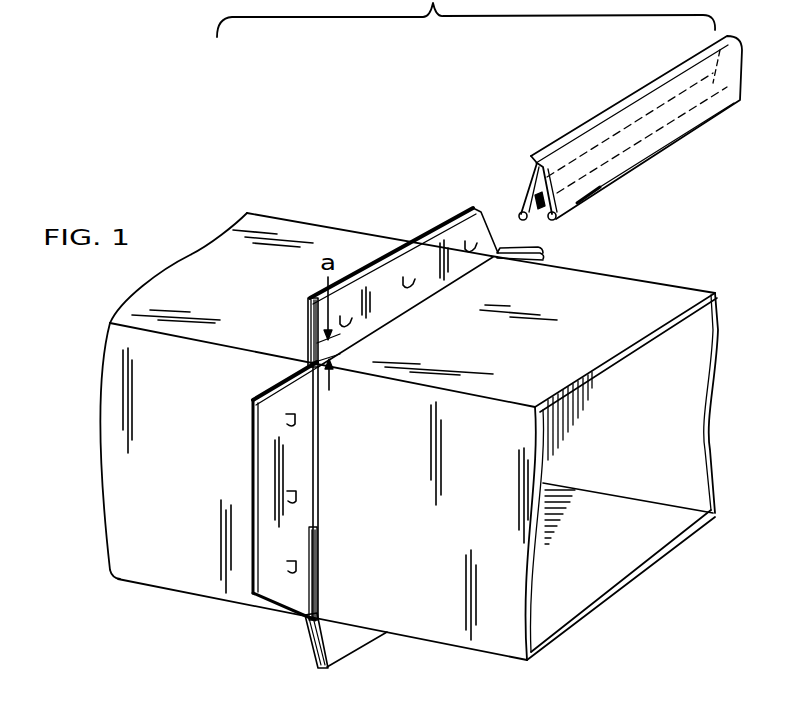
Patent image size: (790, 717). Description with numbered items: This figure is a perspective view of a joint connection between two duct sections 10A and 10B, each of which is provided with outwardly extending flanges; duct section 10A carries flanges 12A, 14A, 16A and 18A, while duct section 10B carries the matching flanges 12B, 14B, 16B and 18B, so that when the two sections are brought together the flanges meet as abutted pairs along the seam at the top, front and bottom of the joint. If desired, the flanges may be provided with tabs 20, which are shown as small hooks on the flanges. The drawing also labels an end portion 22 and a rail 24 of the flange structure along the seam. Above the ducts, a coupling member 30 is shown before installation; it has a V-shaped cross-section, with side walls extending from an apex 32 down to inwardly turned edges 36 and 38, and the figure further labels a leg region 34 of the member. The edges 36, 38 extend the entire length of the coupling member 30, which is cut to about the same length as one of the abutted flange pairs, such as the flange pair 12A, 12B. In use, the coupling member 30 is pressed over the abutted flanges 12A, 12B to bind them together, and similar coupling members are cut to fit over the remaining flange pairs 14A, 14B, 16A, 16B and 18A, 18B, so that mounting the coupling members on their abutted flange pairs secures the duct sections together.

The duct section 10A is at (191, 512).
The duct section 10B is at (504, 517).
The flange 12A is at (425, 256).
The flange 12B is at (410, 240).
The flange 14A is at (253, 432).
The flange 14B is at (303, 465).
The flange 16A is at (308, 640).
The flange 16B is at (355, 637).
The flange 18A is at (512, 250).
The flange 18B is at (530, 262).
The tabs 20 is at (343, 323).
The end wall of connector 22 is at (310, 318).
The top rail of front flange 24 is at (272, 387).
The coupling member 30 is at (611, 149).
The apex 32 is at (640, 92).
The support leg 34 is at (523, 190).
The inwardly turned edge 36 is at (560, 216).
The inwardly turned edge 38 is at (532, 222).